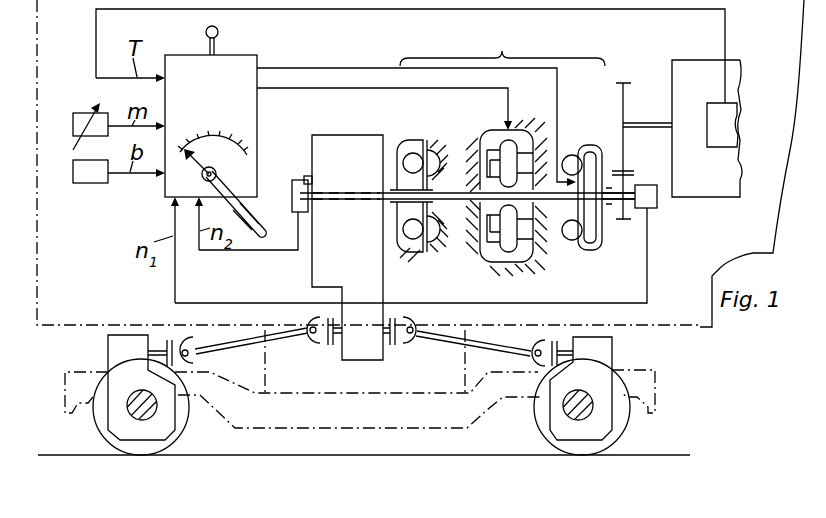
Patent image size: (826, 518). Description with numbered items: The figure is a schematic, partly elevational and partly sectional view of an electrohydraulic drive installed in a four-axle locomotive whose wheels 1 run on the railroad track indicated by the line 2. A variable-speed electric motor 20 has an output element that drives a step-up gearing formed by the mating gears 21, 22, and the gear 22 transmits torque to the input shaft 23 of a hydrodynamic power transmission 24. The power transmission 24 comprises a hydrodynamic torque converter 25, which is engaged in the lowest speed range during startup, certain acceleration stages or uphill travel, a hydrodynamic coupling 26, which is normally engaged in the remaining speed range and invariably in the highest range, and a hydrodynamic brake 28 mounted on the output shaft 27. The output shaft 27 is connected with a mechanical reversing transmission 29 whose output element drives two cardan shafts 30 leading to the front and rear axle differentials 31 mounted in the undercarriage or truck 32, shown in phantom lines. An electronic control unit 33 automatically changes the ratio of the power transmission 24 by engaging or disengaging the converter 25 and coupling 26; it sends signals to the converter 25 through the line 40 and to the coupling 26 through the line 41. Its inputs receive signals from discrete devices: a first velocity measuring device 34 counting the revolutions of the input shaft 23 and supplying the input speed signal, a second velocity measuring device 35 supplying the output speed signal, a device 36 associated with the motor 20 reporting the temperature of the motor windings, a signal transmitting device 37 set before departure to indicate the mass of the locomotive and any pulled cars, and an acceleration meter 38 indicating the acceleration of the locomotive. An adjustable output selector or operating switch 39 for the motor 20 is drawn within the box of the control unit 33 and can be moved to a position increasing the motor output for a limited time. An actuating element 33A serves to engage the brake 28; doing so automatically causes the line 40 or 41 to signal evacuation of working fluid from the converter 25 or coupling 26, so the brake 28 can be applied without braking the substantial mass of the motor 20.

The wheels 1 is at (172, 412).
The railroad track 2 is at (654, 455).
The variable-speed electric motor 20 is at (720, 182).
The gear 21 is at (628, 82).
The gear 22 is at (622, 222).
The input shaft 23 is at (617, 204).
The hydrodynamic power transmission 24 is at (502, 44).
The hydrodynamic torque converter 25 is at (489, 146).
The hydrodynamic coupling 26 is at (586, 145).
The output shaft 27 is at (445, 200).
The hydrodynamic brake 28 is at (410, 140).
The mechanical reversing transmission 29 is at (358, 272).
The cardan shafts 30 is at (456, 344).
The axle differentials 31 is at (118, 352).
The undercarriage or truck 32 is at (35, 202).
The electronic control unit 33 is at (225, 99).
The actuating element 33A is at (222, 36).
The first velocity measuring device 34 is at (650, 205).
The second velocity measuring device 35 is at (297, 178).
The temperature signal transmitting device 36 is at (718, 117).
The mass signal transmitting device 37 is at (78, 114).
The acceleration meter 38 is at (87, 172).
The selector switch 39 is at (218, 176).
The signal transmitting line 40 is at (323, 89).
The signal transmitting line 41 is at (324, 67).